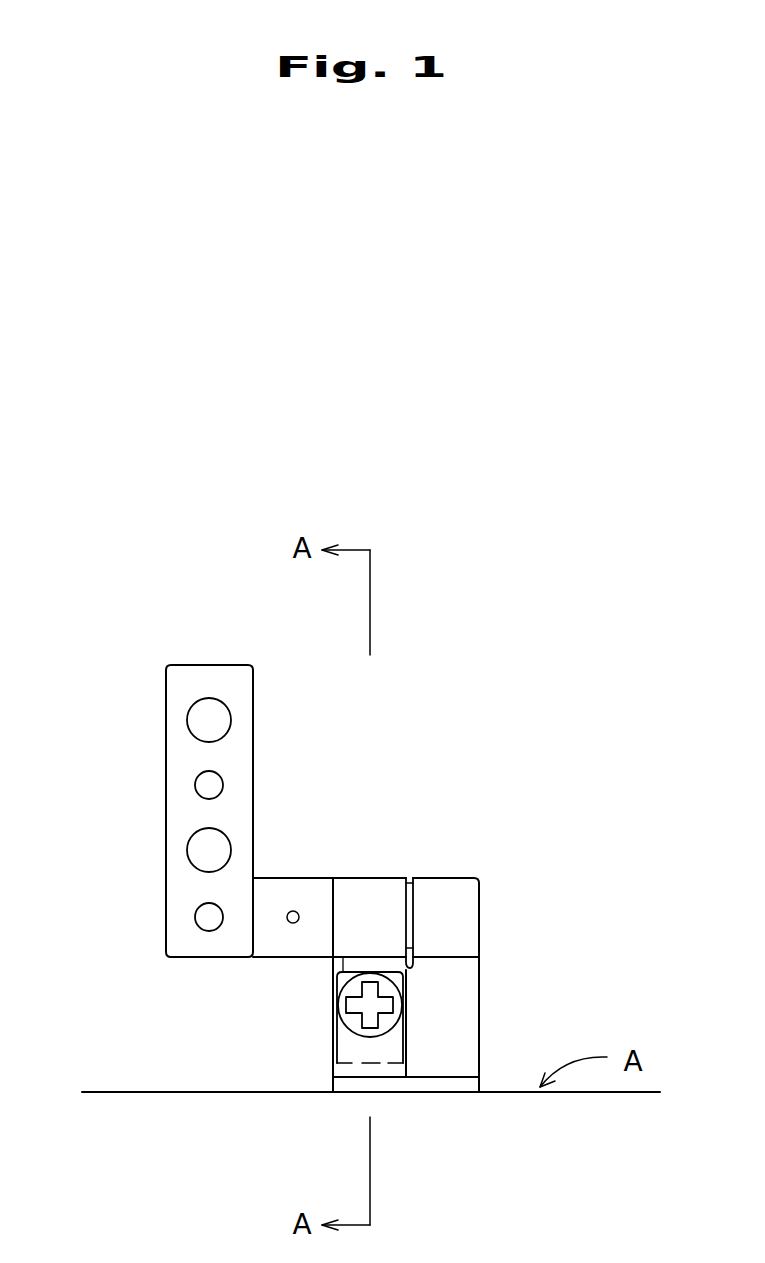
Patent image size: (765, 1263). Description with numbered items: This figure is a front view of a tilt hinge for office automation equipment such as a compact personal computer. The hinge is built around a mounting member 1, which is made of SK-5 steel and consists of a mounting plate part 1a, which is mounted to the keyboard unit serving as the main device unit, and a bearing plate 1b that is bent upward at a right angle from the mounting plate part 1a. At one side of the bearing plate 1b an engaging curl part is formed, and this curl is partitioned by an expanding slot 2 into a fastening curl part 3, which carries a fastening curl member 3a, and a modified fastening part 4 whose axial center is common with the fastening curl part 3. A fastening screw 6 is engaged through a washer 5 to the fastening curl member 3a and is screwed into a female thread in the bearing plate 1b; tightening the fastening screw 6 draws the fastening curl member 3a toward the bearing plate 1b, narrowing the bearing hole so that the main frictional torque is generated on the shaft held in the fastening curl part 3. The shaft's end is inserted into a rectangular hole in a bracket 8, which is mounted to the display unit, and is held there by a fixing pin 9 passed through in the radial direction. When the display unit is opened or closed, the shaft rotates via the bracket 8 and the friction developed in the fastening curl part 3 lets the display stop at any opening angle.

The mounting member 1 is at (457, 1061).
The mounting plate part 1a is at (457, 1080).
The bearing plate 1b is at (480, 1038).
The expanding slot 2 is at (409, 878).
The fastening curl part 3 is at (350, 908).
The fastening curl member 3a is at (345, 963).
The modified fastening part 4 is at (443, 885).
The washer 5 is at (365, 1026).
The fastening screw 6 is at (378, 1008).
The bracket 8 is at (162, 908).
The fixing pin 9 is at (291, 910).